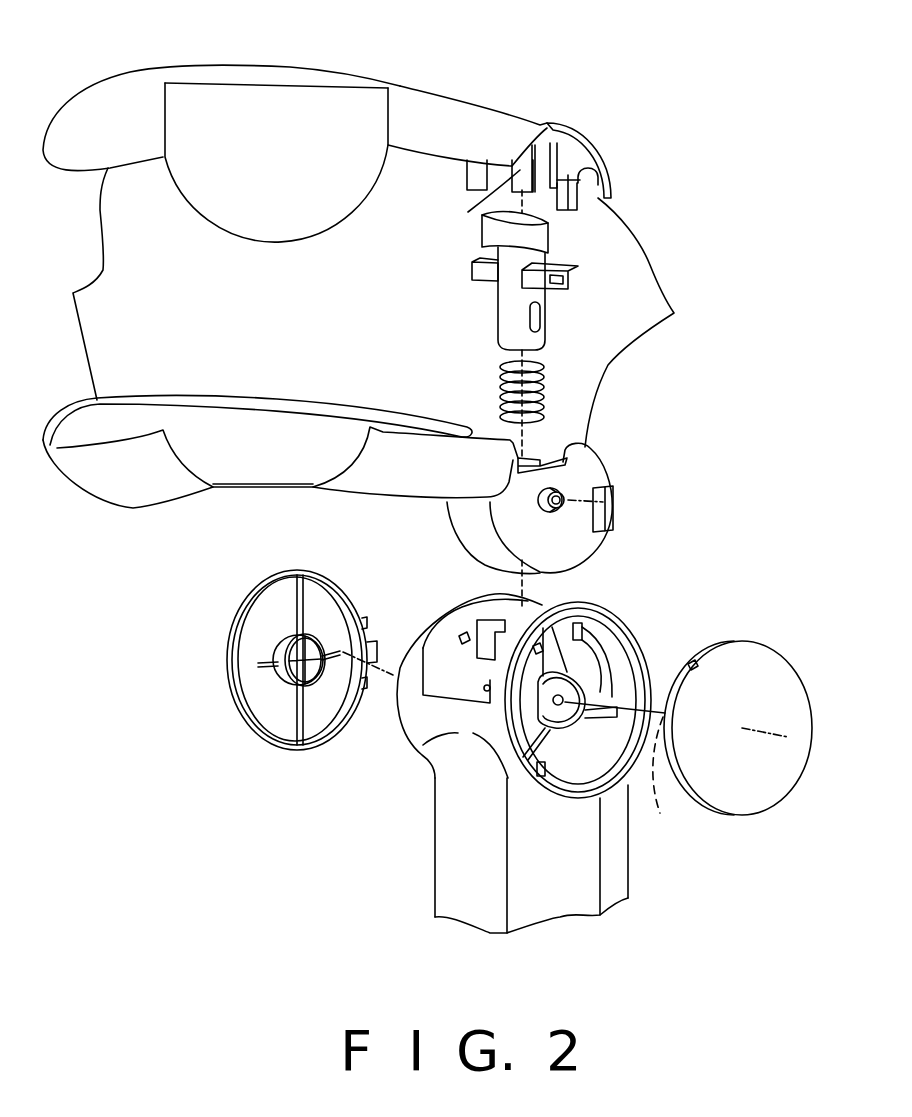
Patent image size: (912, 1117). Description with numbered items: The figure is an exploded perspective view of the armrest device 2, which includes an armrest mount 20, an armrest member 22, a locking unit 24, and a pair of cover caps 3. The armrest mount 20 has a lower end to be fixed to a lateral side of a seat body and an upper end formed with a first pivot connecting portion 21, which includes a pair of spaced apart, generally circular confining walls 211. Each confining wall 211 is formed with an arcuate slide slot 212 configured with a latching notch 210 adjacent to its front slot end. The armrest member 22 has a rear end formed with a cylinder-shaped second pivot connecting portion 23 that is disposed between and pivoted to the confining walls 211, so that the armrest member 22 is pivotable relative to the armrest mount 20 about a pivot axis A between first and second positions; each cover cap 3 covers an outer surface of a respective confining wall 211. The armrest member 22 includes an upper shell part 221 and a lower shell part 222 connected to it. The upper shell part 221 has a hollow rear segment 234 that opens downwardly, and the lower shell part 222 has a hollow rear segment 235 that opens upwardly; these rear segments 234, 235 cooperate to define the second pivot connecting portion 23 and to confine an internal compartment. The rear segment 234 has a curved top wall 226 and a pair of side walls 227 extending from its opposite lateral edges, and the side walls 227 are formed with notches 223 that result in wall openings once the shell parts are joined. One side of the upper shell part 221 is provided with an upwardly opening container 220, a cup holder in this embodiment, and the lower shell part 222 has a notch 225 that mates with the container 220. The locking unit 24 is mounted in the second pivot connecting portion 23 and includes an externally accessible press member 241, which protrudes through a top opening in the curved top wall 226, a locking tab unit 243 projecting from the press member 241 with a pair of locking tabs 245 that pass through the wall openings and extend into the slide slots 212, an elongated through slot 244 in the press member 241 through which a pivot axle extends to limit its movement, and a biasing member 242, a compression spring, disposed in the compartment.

The armrest device 2 is at (707, 242).
The armrest mount 20 is at (572, 898).
The first pivot connecting portion 21 is at (688, 575).
The armrest member 22 is at (361, 208).
The second pivot connecting portion 23 is at (647, 322).
The locking unit 24 is at (475, 330).
The cover caps 3 is at (283, 732).
The latching notch 210 is at (560, 630).
The confining walls 211 is at (455, 600).
The slide slot 212 is at (485, 647).
The container 220 is at (252, 117).
The upper shell part 221 is at (425, 107).
The lower shell part 222 is at (130, 477).
The notches 223 is at (543, 165).
The notch 225 is at (240, 485).
The curved top wall 226 is at (585, 128).
The side walls 227 is at (470, 174).
The hollow rear segment 234 is at (600, 143).
The hollow rear segment 235 is at (447, 507).
The press member 241 is at (510, 302).
The biasing member 242 is at (500, 395).
The locking tab unit 243 is at (578, 288).
The through slot 244 is at (528, 320).
The locking tabs 245 is at (470, 266).
The pivot axis A is at (660, 784).